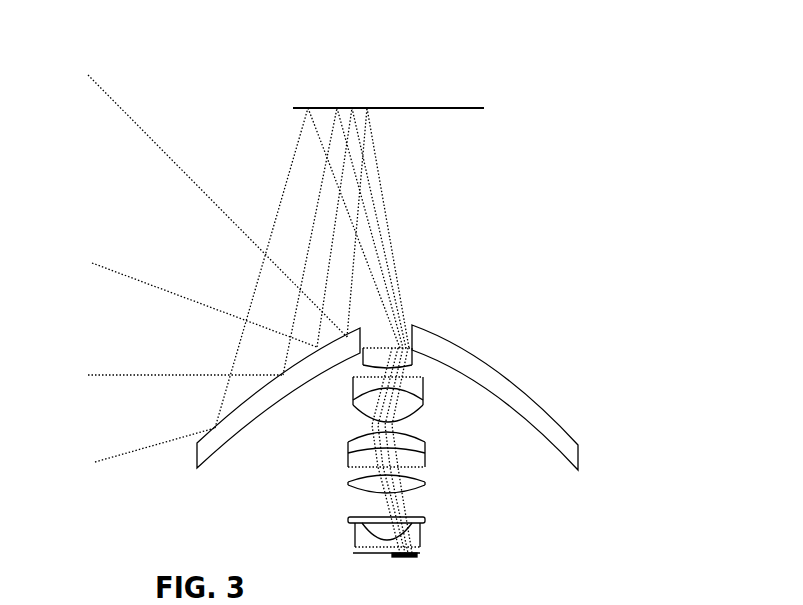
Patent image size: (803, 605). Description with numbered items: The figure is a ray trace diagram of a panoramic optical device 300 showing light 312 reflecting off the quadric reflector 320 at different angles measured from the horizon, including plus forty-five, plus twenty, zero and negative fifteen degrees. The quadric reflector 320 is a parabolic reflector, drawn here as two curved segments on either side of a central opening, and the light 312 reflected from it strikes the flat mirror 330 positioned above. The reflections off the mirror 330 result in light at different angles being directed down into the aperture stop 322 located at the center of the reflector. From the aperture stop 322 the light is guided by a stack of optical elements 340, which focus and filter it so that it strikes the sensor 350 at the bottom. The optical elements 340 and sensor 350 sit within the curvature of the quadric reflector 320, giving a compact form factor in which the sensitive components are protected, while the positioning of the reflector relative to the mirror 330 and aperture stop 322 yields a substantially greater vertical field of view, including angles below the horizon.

The optical system 300 is at (781, 32).
The light 312 is at (115, 103).
The quadric reflector 320 is at (487, 377).
The aperture stop 322 is at (407, 347).
The mirror 330 is at (403, 106).
The optical elements 340 is at (437, 437).
The sensor 350 is at (440, 542).